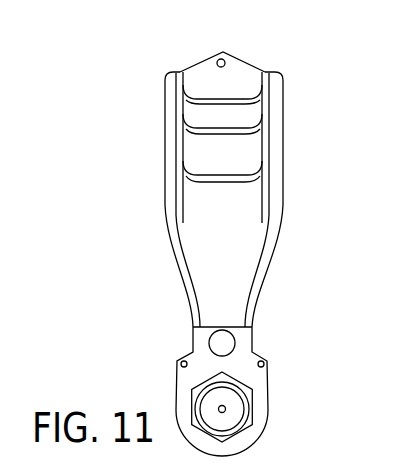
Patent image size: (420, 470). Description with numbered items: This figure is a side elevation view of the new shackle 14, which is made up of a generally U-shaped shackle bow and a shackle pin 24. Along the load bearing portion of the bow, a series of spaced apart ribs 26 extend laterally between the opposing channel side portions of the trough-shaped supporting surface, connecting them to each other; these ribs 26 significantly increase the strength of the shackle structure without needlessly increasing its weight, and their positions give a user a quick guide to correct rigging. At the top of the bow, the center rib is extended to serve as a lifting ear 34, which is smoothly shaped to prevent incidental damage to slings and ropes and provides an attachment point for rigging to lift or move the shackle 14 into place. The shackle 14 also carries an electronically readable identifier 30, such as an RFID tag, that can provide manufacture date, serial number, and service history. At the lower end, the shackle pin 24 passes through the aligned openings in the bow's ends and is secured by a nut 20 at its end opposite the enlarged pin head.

The shackle 14 is at (160, 100).
The ribs 26 is at (205, 108).
The lifting ear 34 is at (242, 68).
The electronically readable identifier 30 is at (222, 343).
The nut 20 is at (250, 400).
The shackle pin 24 is at (233, 418).